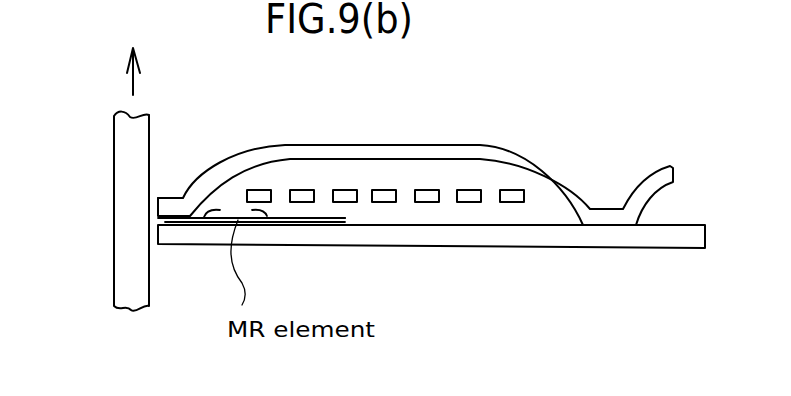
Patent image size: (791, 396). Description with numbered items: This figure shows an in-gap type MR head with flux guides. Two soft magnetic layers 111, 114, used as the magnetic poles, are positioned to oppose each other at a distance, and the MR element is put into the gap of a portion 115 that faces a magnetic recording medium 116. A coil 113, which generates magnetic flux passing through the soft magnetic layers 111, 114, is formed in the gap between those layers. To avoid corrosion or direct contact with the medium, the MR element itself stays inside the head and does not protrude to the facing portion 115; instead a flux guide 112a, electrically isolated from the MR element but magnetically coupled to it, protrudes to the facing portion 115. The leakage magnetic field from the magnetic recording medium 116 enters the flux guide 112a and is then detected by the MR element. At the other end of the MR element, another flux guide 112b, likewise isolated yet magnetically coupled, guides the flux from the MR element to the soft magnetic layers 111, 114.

The soft magnetic layer 111 is at (403, 237).
The flux guide 112a is at (188, 220).
The flux guide 112b is at (322, 223).
The coil 113 is at (470, 203).
The soft magnetic layer 114 is at (410, 160).
The portion facing the magnetic recording medium 115 is at (172, 184).
The magnetic recording medium 116 is at (133, 309).